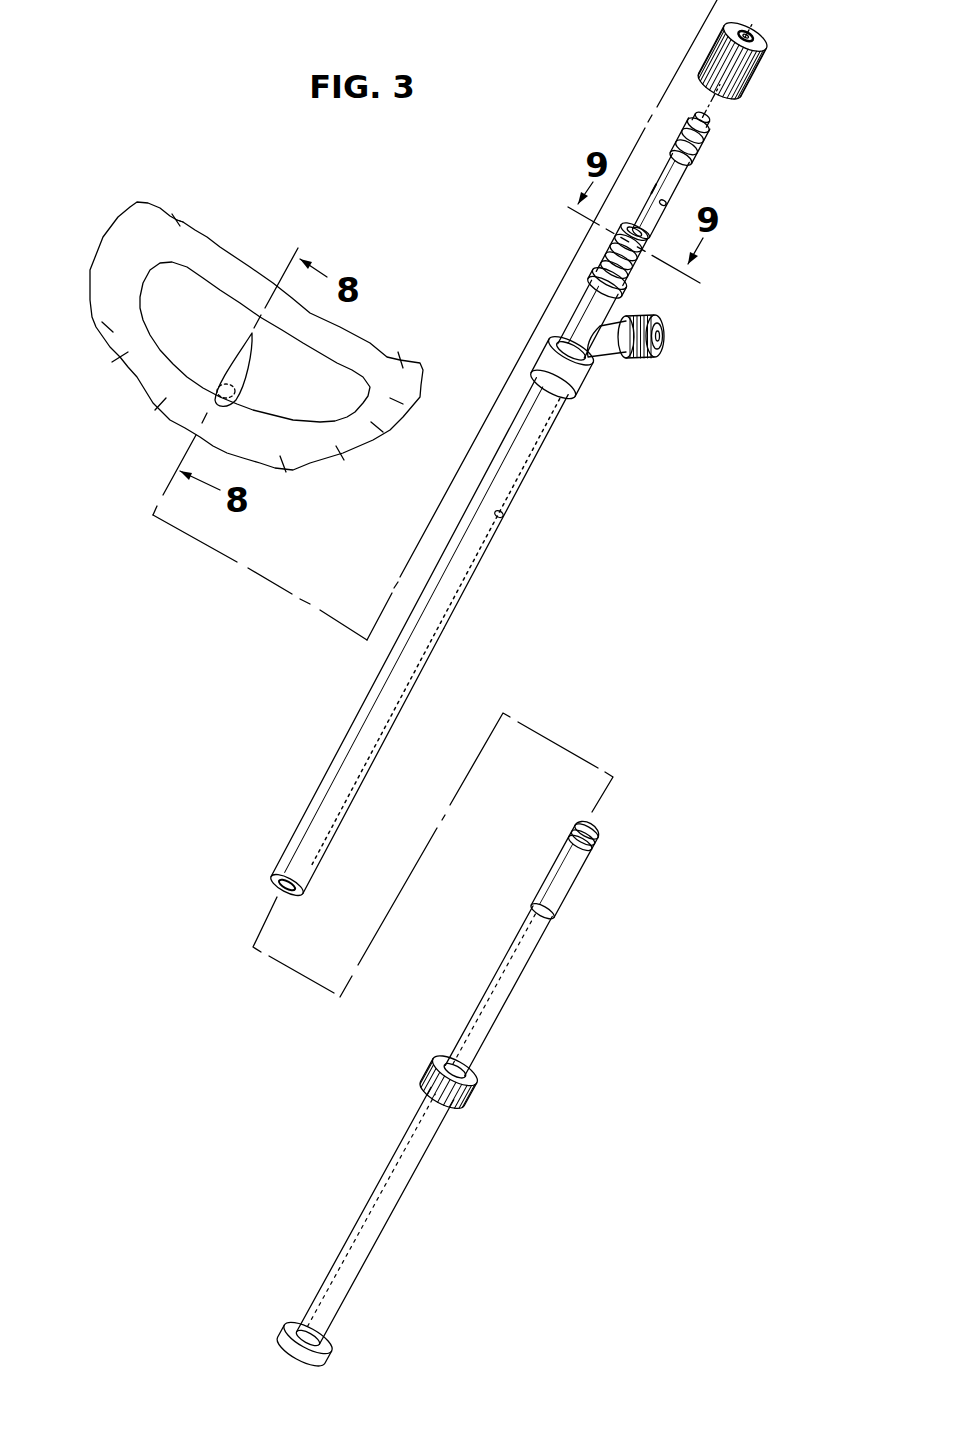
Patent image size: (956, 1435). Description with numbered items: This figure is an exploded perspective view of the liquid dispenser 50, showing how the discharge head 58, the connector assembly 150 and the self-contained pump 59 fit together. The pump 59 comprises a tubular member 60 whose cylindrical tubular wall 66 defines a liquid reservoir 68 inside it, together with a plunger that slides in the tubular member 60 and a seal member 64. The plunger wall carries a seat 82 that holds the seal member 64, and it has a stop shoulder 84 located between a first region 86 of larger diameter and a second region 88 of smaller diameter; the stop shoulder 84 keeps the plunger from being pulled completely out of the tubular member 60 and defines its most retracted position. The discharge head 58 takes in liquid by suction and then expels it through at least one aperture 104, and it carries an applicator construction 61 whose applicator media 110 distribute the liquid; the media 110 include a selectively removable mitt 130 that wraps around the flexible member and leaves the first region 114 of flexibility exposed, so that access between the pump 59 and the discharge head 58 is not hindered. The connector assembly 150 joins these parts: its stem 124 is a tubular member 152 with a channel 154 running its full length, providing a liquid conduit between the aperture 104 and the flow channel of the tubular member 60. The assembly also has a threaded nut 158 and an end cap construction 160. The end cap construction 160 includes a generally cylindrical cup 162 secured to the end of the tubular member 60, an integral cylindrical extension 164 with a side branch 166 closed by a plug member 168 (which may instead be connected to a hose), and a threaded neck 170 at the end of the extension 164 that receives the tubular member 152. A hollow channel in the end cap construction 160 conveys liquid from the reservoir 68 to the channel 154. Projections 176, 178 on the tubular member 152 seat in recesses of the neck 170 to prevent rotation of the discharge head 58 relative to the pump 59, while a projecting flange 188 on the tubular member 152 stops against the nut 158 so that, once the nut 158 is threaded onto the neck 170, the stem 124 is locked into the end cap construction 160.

The liquid dispenser 50 is at (122, 108).
The discharge head 58 is at (83, 219).
The self-contained pump 59 is at (624, 634).
The tubular member 60 is at (401, 712).
The applicator construction 61 is at (195, 273).
The seal member 64 is at (578, 819).
The tubular wall 66 is at (457, 603).
The liquid reservoir 68 is at (504, 518).
The seat 82 is at (594, 846).
The stop shoulder 84 is at (532, 906).
The first region 86 is at (564, 898).
The second region 88 is at (501, 1020).
The aperture 104 is at (238, 383).
The applicator media 110 is at (236, 275).
The first region of flexibility 114 is at (140, 295).
The stem 124 is at (692, 164).
The mitt 130 is at (118, 352).
The connector assembly 150 is at (624, 70).
The tubular member 152 is at (663, 157).
The channel 154 is at (702, 117).
The threaded nut 158 is at (769, 61).
The end cap construction 160 is at (695, 320).
The cup 162 is at (587, 377).
The extension 164 is at (568, 318).
The side branch 166 is at (610, 327).
The plug member 168 is at (662, 348).
The threaded neck 170 is at (626, 265).
The projection 176 is at (667, 202).
The projection 178 is at (650, 187).
The projecting flange 188 is at (701, 144).